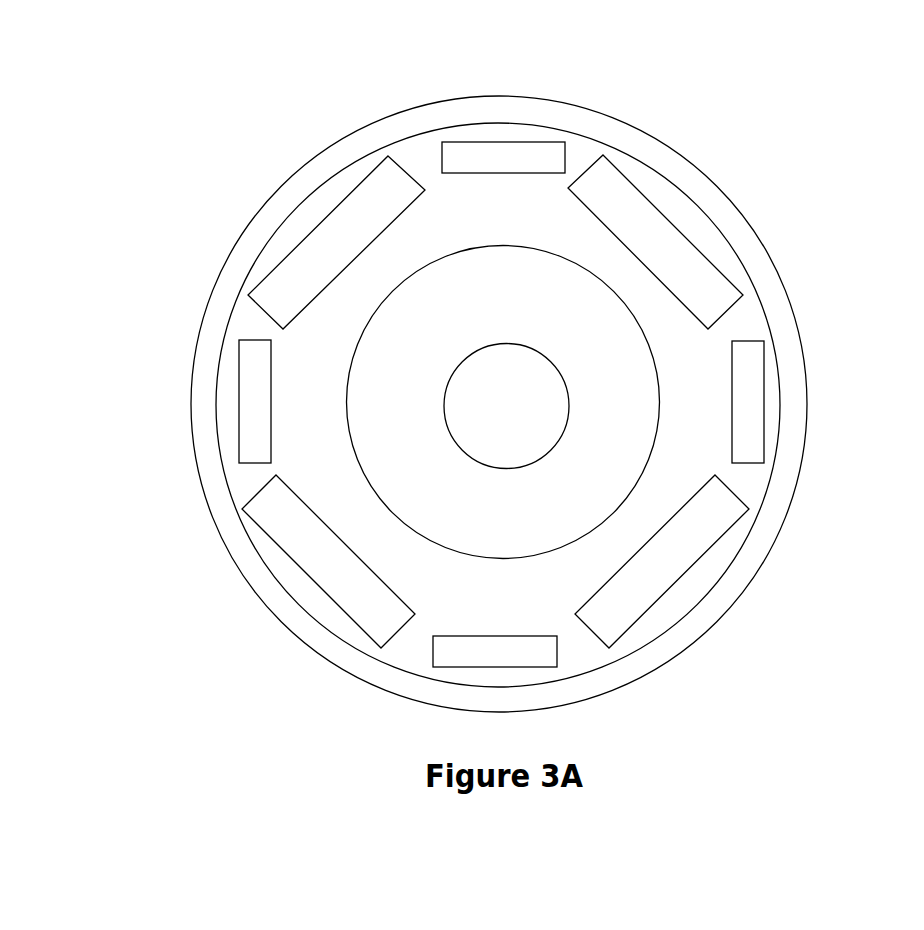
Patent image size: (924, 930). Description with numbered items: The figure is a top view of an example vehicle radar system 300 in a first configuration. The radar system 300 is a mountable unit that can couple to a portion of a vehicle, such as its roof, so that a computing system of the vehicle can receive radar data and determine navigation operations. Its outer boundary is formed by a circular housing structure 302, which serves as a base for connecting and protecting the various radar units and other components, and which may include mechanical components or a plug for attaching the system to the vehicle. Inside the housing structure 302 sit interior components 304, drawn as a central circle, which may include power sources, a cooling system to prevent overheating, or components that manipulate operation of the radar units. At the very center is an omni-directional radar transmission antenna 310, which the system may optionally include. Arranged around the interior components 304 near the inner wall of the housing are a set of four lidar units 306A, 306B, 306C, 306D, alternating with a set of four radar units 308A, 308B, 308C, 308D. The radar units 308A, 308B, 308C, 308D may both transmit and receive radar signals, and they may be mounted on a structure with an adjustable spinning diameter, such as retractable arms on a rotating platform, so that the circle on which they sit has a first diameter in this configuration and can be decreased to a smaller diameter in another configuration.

The vehicle radar system 300 is at (279, 124).
The housing structure 302 is at (233, 563).
The interior components 304 is at (422, 268).
The lidar unit 306A is at (662, 212).
The lidar unit 306B is at (680, 578).
The lidar unit 306C is at (450, 634).
The lidar unit 306D is at (239, 402).
The radar unit 308A is at (493, 141).
The radar unit 308B is at (763, 402).
The radar unit 308C is at (305, 577).
The radar unit 308D is at (318, 227).
The omni-directional radar transmission antenna 310 is at (468, 354).